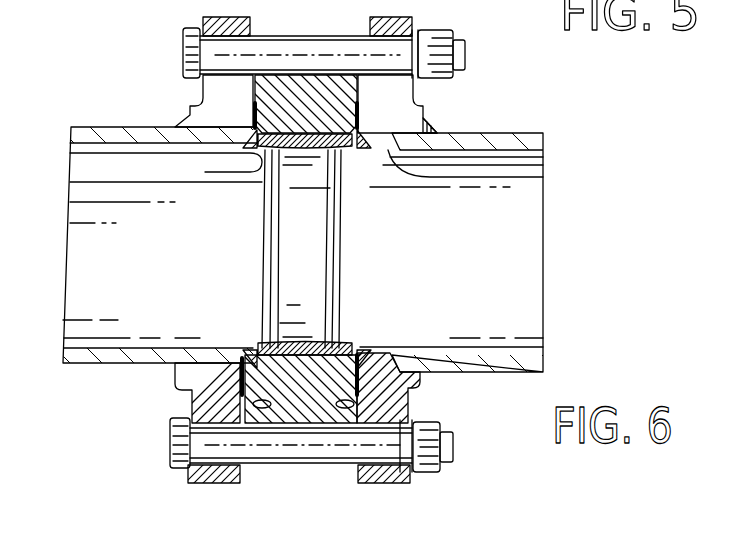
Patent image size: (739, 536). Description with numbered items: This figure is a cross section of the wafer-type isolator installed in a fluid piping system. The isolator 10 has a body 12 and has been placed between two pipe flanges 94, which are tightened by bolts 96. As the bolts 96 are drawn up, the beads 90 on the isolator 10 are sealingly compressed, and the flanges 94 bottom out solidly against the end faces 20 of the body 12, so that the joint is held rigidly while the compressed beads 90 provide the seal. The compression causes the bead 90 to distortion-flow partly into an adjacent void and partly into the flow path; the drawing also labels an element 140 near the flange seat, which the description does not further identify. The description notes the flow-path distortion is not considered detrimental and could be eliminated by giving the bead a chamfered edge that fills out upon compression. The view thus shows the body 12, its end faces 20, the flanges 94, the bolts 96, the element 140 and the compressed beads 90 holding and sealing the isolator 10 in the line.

The isolator 10 is at (280, 76).
The body 12 is at (310, 75).
The end faces 20 is at (200, 106).
The beads 90 is at (543, 178).
The flanges 94 is at (238, 163).
The bolts 96 is at (184, 38).
The sealing wedge 140 is at (435, 115).